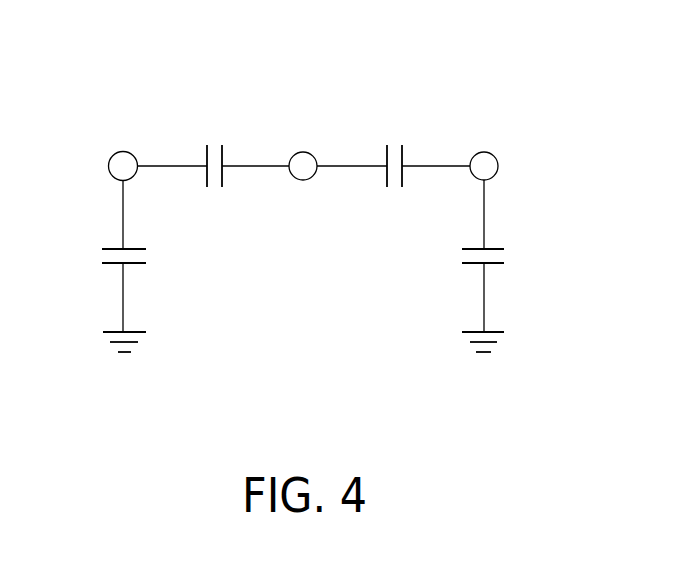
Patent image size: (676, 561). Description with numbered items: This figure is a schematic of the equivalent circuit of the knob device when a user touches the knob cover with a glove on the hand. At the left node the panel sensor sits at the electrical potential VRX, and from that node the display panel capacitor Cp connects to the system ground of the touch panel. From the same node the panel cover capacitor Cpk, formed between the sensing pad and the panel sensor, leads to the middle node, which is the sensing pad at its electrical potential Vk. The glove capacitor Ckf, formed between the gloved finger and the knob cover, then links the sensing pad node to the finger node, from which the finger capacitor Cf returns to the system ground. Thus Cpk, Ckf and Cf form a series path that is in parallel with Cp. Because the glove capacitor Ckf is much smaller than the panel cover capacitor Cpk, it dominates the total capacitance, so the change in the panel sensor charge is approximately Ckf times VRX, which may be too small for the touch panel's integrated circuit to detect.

The electrical potential of the panel sensor VRX is at (122, 149).
The panel cover capacitor Cpk is at (212, 149).
The electrical potential of the sensing pad Vk is at (303, 149).
The glove capacitor Ckf is at (392, 148).
The display panel capacitor Cp is at (105, 267).
The finger capacitor Cf is at (500, 266).